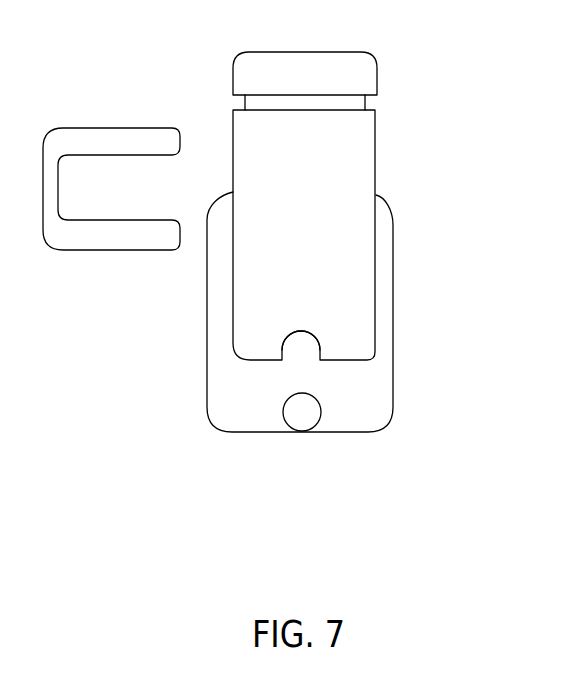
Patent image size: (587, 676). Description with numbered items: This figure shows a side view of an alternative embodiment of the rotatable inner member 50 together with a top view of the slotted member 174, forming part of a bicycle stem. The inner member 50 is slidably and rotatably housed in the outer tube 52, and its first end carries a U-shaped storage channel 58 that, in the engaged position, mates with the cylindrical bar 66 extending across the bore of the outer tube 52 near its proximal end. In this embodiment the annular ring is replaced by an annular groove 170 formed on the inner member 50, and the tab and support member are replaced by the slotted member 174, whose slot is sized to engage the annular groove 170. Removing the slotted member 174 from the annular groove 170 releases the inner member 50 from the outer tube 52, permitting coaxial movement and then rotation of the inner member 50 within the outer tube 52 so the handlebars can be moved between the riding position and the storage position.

The slotted member 174 is at (63, 143).
The annular groove 170 is at (347, 103).
The rotatable inner member 50 is at (357, 160).
The outer tube 52 is at (385, 270).
The storage channel 58 is at (312, 346).
The bar 66 is at (302, 418).